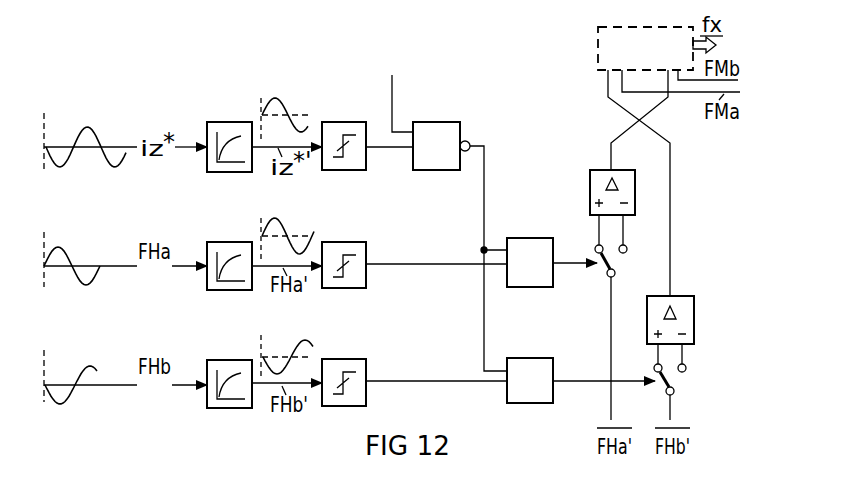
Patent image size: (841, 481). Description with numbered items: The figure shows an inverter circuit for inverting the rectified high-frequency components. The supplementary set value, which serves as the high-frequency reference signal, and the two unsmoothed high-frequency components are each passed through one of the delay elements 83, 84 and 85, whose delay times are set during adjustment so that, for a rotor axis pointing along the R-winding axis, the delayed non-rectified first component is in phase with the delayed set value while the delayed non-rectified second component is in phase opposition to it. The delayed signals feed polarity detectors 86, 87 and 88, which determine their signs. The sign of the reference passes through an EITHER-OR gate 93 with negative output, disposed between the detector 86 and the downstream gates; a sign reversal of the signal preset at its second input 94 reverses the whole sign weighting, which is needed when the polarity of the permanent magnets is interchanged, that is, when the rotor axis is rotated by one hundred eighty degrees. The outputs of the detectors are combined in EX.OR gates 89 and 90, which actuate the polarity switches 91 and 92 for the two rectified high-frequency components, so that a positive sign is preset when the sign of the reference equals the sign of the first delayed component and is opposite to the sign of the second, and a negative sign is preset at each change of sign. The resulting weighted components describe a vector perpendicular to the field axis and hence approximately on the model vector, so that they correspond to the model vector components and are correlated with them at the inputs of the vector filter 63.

The vector filter 63 is at (599, 47).
The delay element 83 is at (223, 122).
The delay element 84 is at (228, 242).
The delay element 85 is at (229, 360).
The polarity detector 86 is at (336, 122).
The polarity detector 87 is at (338, 242).
The polarity detector 88 is at (357, 359).
The EX.OR gate 89 is at (520, 238).
The EX.OR gate 90 is at (537, 358).
The polarity switch 91 is at (590, 193).
The polarity switch 92 is at (702, 306).
The EITHER-OR gate with negative output 93 is at (435, 122).
The second input 94 is at (393, 90).